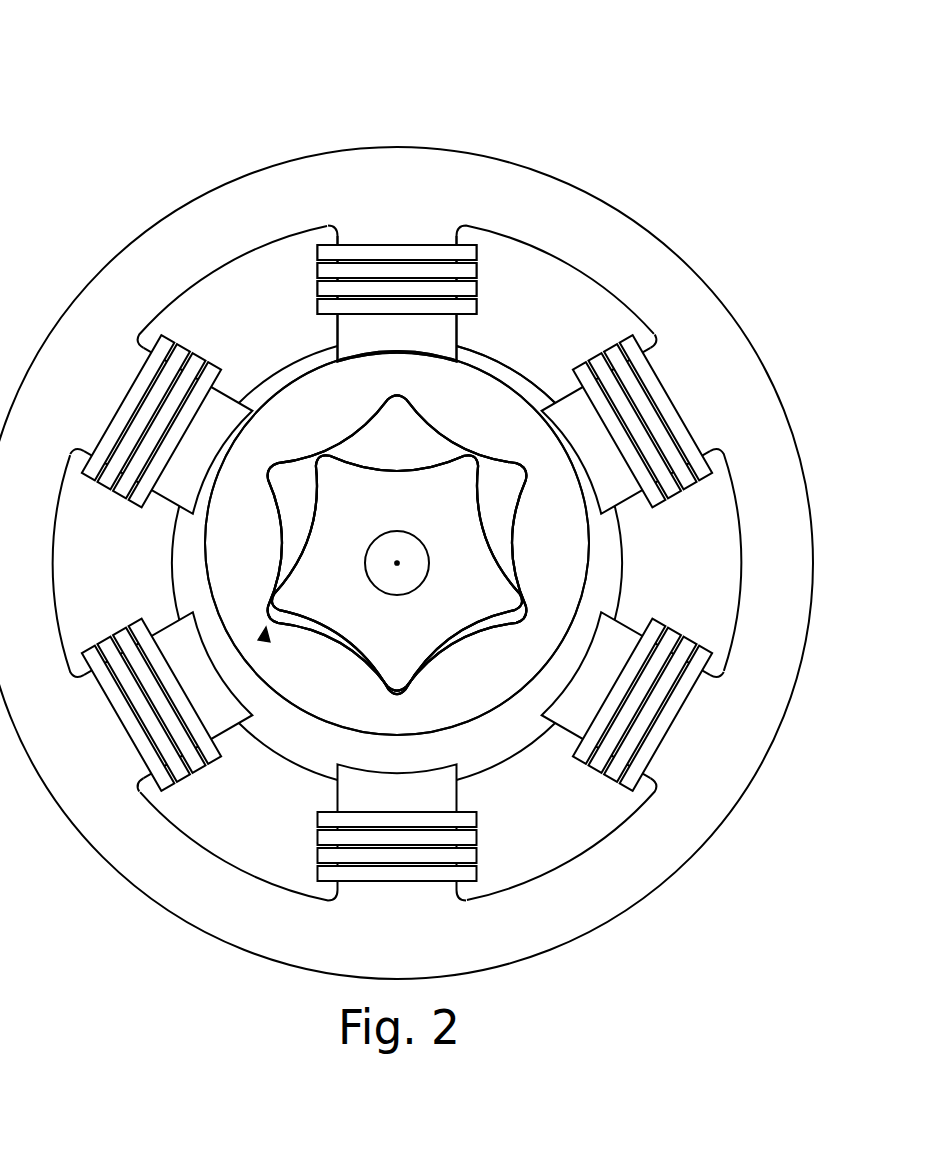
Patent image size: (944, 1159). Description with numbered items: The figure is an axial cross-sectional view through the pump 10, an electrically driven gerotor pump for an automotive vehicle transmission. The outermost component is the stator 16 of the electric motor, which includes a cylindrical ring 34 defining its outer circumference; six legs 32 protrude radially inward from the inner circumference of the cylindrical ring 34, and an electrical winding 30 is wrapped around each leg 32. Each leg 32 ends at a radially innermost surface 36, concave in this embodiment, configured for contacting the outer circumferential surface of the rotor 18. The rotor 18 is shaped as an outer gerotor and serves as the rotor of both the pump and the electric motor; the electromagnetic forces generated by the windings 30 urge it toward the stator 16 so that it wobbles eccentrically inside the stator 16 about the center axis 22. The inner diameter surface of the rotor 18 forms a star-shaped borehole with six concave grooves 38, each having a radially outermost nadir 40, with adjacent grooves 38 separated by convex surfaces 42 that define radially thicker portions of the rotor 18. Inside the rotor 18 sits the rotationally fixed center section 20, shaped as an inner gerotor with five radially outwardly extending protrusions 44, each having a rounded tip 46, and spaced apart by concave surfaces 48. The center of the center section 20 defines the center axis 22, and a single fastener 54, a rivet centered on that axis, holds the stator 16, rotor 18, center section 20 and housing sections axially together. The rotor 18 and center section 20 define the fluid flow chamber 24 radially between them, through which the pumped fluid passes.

The pump 10 is at (160, 108).
The stator 16 is at (651, 235).
The rotor 18 is at (280, 437).
The center section 20 is at (358, 622).
The center axis 22 is at (397, 560).
The fluid flow chamber 24 is at (412, 454).
The electrical windings 30 is at (367, 272).
The legs 32 is at (434, 332).
The cylindrical ring 34 is at (558, 213).
The radially innermost surface 36 is at (207, 473).
The grooves 38 is at (263, 636).
The radially outermost nadir 40 is at (262, 470).
The convex surfaces 42 is at (280, 530).
The protrusions 44 is at (336, 474).
The radially outermost rounded tip 46 is at (273, 600).
The concave surfaces 48 is at (320, 528).
The fastener 54 is at (408, 581).